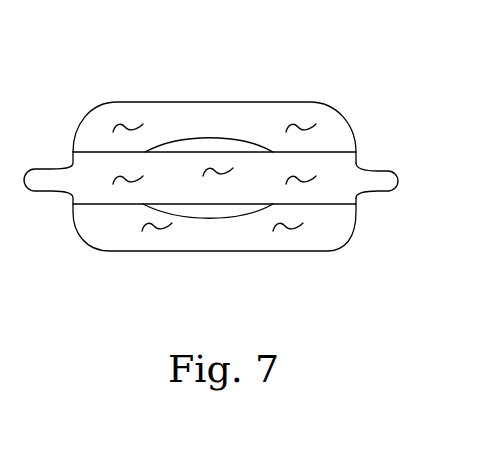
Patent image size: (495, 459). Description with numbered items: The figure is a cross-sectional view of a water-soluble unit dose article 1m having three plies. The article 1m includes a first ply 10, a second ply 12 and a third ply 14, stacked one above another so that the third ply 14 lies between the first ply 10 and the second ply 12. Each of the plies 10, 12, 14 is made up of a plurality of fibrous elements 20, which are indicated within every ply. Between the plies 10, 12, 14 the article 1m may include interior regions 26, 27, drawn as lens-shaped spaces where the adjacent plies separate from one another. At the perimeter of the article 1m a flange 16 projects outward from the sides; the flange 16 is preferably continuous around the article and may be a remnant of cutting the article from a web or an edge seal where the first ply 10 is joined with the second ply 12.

The water-soluble unit dose article 1m is at (357, 109).
The first ply 10 is at (348, 129).
The second ply 12 is at (330, 237).
The third ply 14 is at (343, 172).
The flange 16 is at (380, 192).
The fibrous elements 20 is at (124, 127).
The interior region 26 is at (235, 150).
The interior region 27 is at (220, 210).